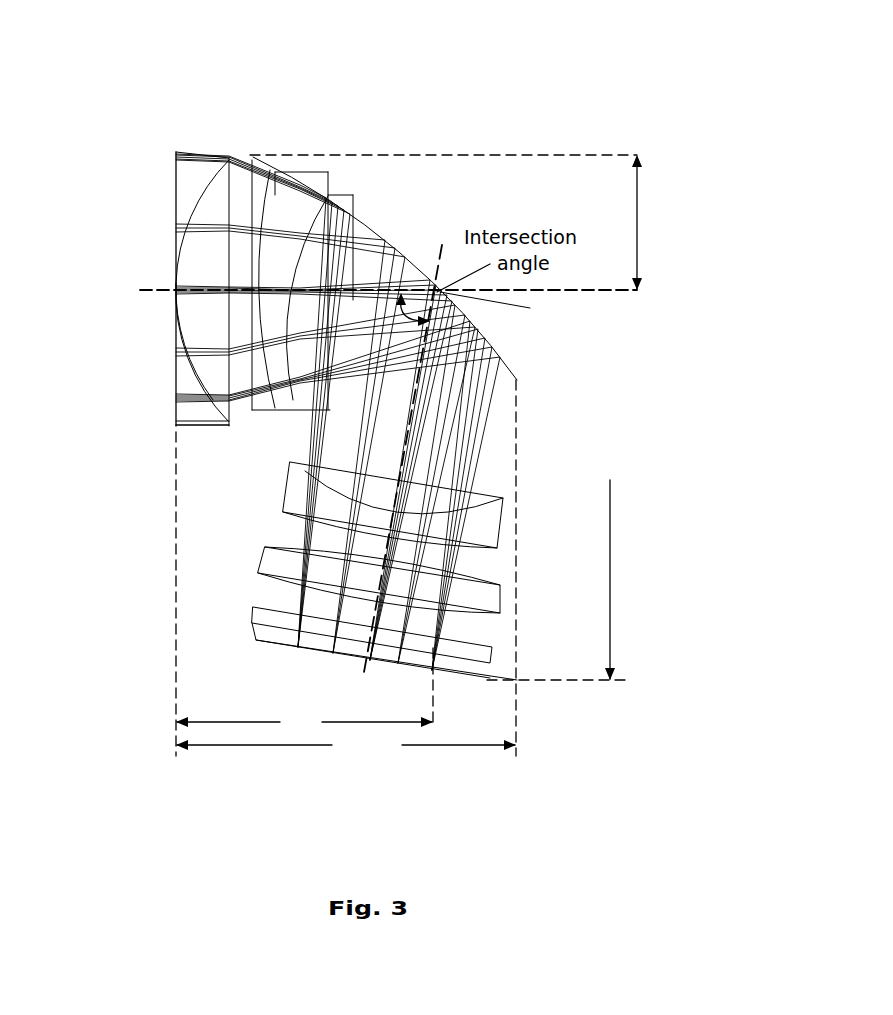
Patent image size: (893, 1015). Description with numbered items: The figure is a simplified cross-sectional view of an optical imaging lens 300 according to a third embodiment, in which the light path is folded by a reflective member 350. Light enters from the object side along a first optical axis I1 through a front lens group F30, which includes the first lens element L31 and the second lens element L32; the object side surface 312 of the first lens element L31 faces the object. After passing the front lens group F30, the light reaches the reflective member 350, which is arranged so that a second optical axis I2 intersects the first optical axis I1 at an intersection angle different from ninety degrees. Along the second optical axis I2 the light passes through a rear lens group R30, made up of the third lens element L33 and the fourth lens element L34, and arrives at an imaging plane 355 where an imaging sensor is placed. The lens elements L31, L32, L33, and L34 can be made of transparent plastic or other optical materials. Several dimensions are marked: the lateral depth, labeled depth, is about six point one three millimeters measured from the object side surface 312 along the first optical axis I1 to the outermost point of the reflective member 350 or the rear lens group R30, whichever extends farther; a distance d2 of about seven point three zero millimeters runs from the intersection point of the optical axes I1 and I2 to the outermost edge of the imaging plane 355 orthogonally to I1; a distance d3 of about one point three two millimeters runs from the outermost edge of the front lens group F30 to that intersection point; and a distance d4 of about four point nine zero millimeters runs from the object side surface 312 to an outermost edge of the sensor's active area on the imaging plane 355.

The optical imaging lens 300 is at (599, 103).
The object side surface 312 is at (204, 389).
The reflective member 350 is at (396, 240).
The imaging plane 355 is at (263, 643).
The front lens group F30 is at (313, 144).
The rear lens group R30 is at (277, 455).
The first lens element L31 is at (178, 301).
The second lens element L32 is at (302, 295).
The third lens element L33 is at (408, 505).
The fourth lens element L34 is at (395, 581).
The first optical axis I1 is at (375, 291).
The second optical axis I2 is at (395, 483).
The distance d2 is at (609, 567).
The distance d3 is at (636, 222).
The distance d4 is at (304, 722).
The lateral depth is at (346, 746).